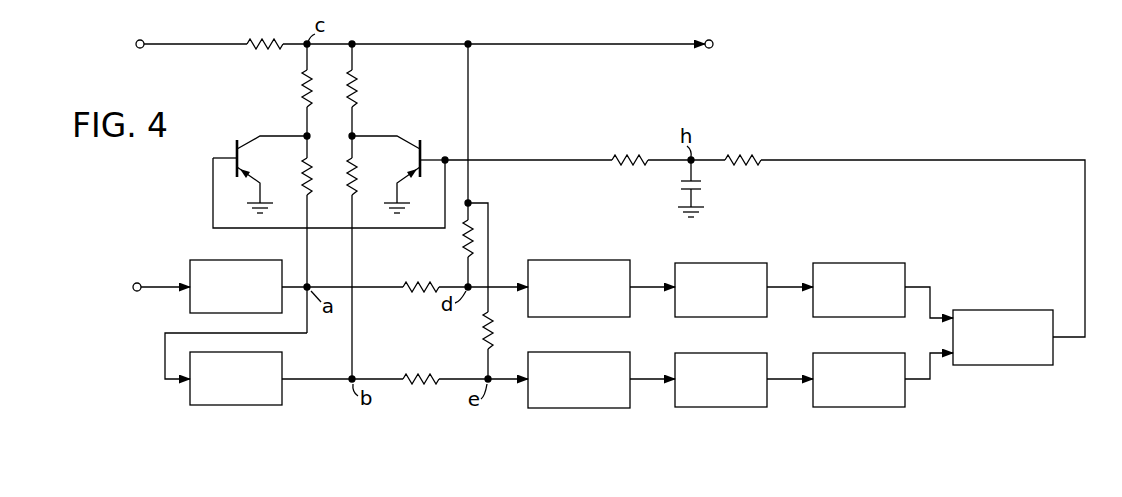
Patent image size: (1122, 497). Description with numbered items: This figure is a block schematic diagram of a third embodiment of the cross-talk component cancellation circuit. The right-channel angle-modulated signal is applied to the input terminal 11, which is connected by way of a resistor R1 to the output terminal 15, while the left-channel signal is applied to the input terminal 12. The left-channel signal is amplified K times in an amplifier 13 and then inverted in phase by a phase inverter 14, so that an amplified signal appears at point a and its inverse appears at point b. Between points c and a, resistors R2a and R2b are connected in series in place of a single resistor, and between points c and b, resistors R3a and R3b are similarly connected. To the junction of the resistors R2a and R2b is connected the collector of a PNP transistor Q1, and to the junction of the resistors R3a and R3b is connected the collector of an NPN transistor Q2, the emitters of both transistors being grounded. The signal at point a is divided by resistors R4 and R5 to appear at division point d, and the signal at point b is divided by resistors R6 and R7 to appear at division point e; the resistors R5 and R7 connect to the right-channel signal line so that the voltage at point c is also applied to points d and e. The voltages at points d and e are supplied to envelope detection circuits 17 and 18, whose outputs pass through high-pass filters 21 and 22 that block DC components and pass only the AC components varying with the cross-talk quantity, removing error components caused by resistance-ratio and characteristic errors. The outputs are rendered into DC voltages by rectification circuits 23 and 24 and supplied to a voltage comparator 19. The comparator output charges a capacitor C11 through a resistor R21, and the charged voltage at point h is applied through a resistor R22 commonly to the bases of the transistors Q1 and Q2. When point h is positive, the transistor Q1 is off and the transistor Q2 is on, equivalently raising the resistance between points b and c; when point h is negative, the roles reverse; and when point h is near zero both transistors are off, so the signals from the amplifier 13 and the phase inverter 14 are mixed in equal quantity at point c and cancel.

The input terminal 11 is at (139, 41).
The input terminal 12 is at (137, 281).
The amplifier 13 is at (207, 259).
The phase inverter 14 is at (284, 395).
The output terminal 15 is at (714, 41).
The envelope detection circuit 17 is at (580, 259).
The envelope detection circuit 18 is at (568, 409).
The voltage comparator 19 is at (1013, 366).
The high-pass filter 21 is at (694, 262).
The high-pass filter 22 is at (702, 408).
The rectification circuit 23 is at (846, 262).
The rectification circuit 24 is at (852, 408).
The resistor R1 is at (265, 32).
The resistor R2a is at (285, 88).
The resistor R2b is at (287, 176).
The resistor R3a is at (374, 88).
The resistor R3b is at (375, 176).
The resistor R4 is at (421, 275).
The resistor R5 is at (452, 240).
The resistor R6 is at (421, 367).
The resistor R7 is at (474, 330).
The resistor R21 is at (749, 148).
The resistor R22 is at (635, 148).
The capacitor C11 is at (711, 188).
The PNP transistor Q1 is at (260, 162).
The NPN transistor Q2 is at (398, 162).